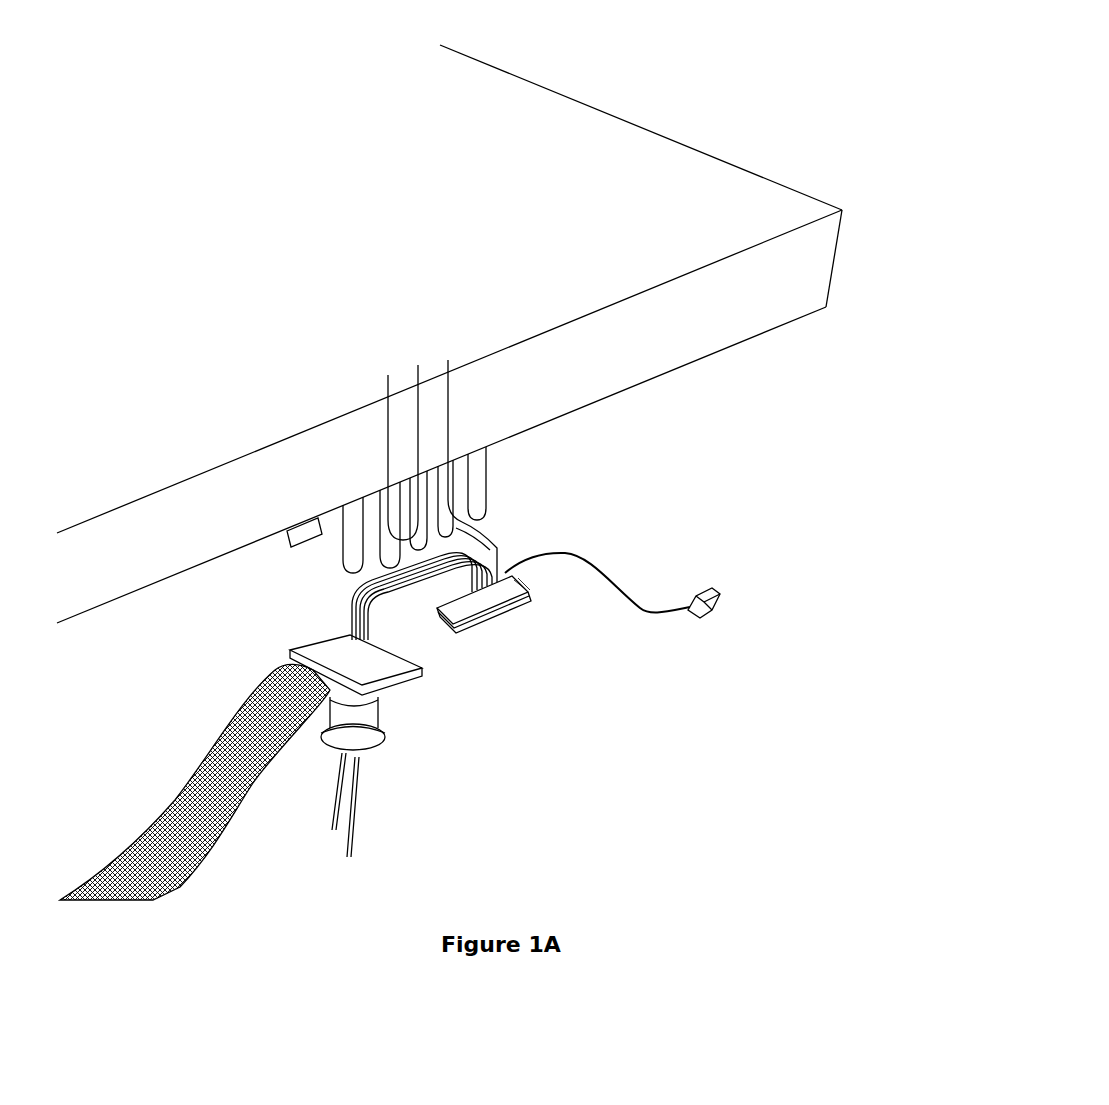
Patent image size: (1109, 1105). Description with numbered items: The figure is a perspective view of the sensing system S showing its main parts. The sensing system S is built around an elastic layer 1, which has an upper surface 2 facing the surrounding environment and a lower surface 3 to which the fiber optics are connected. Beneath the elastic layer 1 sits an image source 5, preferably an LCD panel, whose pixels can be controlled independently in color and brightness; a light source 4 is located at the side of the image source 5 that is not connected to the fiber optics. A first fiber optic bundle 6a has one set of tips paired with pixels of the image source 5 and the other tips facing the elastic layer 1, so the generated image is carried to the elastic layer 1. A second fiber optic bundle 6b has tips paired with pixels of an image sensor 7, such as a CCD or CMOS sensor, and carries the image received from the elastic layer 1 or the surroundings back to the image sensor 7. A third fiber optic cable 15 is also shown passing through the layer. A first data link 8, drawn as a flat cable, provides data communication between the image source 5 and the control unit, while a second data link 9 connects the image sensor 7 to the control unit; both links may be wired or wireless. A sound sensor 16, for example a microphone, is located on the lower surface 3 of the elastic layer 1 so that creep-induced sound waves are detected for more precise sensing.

The sensing system S is at (757, 119).
The elastic layer 1 is at (765, 273).
The upper surface 2 is at (780, 238).
The lower surface 3 is at (680, 378).
The light source 4 is at (355, 727).
The image source 5 is at (383, 660).
The first fiber optic bundle 6a is at (340, 607).
The second fiber optic bundle 6b is at (490, 530).
The image sensor 7 is at (477, 597).
The first data link 8 is at (210, 813).
The second data link 9 is at (650, 612).
The third fiber optic cable 15 is at (418, 430).
The sound sensor 16 is at (311, 530).